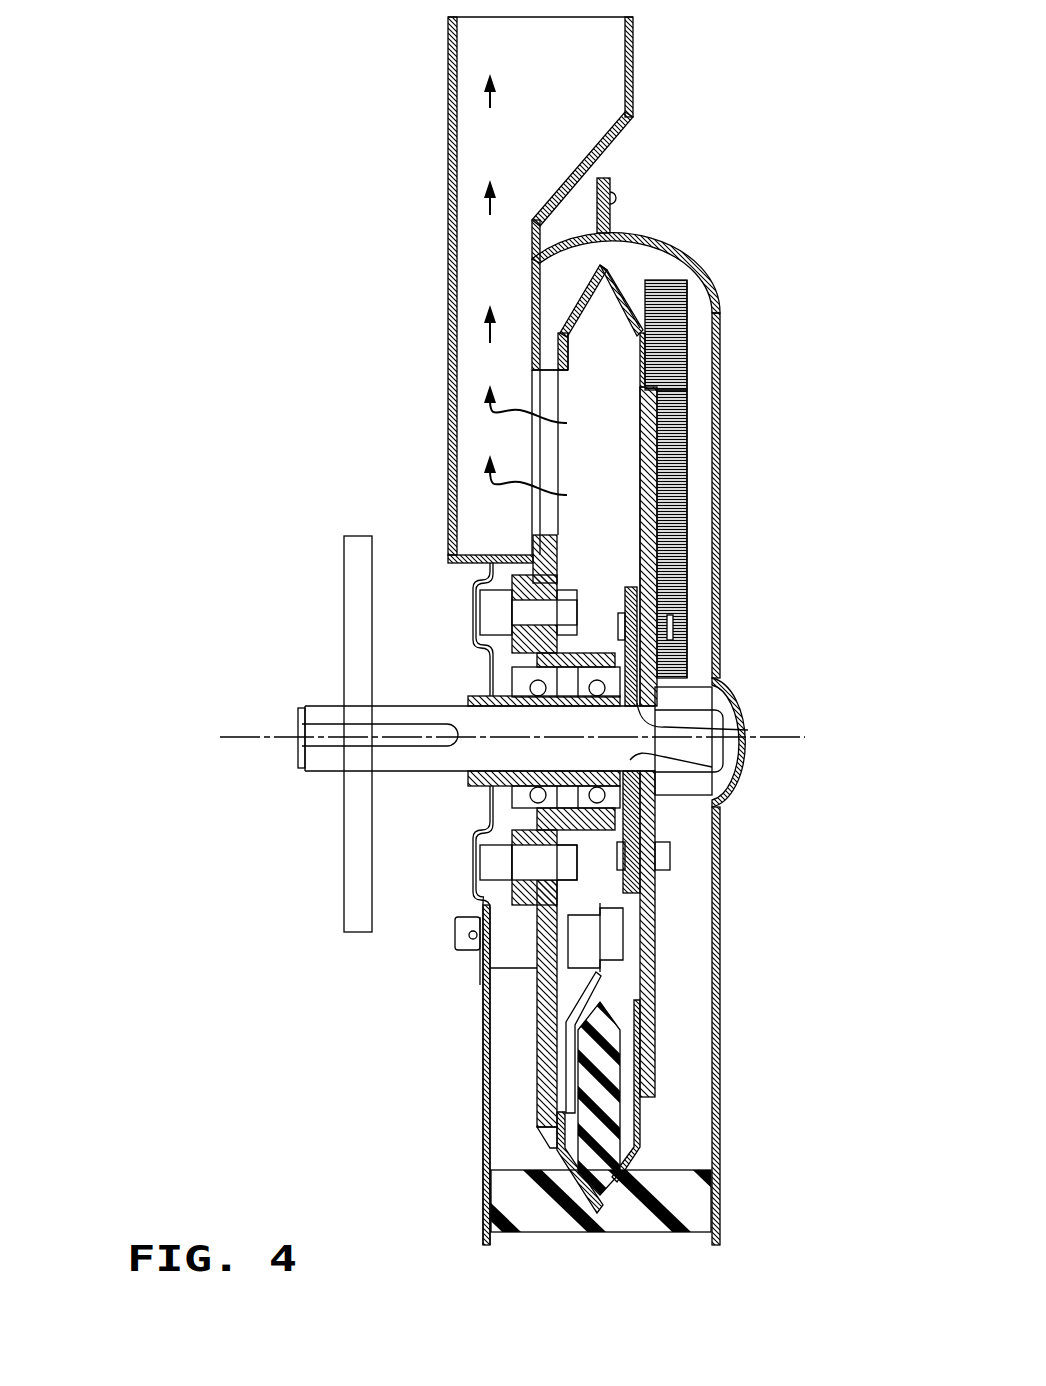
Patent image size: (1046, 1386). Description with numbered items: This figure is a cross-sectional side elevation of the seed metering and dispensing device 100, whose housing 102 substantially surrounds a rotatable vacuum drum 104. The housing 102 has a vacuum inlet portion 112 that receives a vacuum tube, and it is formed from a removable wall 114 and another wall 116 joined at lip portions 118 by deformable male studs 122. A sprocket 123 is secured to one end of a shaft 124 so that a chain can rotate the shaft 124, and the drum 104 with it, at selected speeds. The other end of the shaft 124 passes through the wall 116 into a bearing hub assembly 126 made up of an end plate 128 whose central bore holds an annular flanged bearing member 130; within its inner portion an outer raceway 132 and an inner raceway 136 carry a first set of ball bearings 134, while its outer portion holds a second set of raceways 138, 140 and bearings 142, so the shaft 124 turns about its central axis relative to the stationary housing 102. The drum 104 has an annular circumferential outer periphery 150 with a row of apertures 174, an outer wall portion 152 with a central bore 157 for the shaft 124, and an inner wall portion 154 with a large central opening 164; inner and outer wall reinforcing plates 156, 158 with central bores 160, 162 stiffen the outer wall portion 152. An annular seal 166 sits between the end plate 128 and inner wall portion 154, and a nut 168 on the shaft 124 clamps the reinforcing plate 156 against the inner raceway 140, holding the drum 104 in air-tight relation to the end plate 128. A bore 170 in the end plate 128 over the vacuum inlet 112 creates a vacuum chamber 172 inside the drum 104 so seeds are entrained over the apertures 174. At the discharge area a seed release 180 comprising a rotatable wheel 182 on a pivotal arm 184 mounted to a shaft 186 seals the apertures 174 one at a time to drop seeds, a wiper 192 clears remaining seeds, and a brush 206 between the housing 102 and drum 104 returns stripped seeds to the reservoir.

The seed metering and dispensing device 100 is at (772, 68).
The housing 102 is at (724, 426).
The rotatable vacuum drum 104 is at (645, 1116).
The vacuum inlet portion 112 is at (448, 60).
The removable wall 114 is at (718, 903).
The wall 116 is at (483, 1050).
The lip portion 118 is at (603, 178).
The deformable male stud 122 is at (617, 199).
The sprocket 123 is at (343, 555).
The shaft 124 is at (317, 705).
The bearing hub assembly 126 is at (451, 785).
The end plate 128 is at (553, 555).
The annular flanged bearing member 130 is at (592, 655).
The outer raceway 132 is at (470, 626).
The first set of ball bearings 134 is at (527, 686).
The inner raceway 136 is at (468, 696).
The outer raceway 138 is at (690, 647).
The inner raceway 140 is at (658, 689).
The bearings 142 is at (688, 665).
The annular circumferential outer periphery 150 is at (604, 270).
The outer wall portion 152 is at (640, 417).
The inner wall portion 154 is at (568, 352).
The inner wall reinforcing plate 156 is at (684, 592).
The central bore 157 is at (749, 730).
The outer wall reinforcing plate 158 is at (688, 505).
The central bore 160 is at (715, 757).
The central bore 162 is at (717, 787).
The large central opening 164 is at (565, 370).
The annular seal 166 is at (558, 352).
The nut 168 is at (752, 742).
The bore 170 is at (558, 517).
The vacuum chamber 172 is at (688, 457).
The apertures 174 is at (620, 300).
The seed release 180 is at (620, 1008).
The rotatable wheel 182 is at (610, 1062).
The arm 184 is at (570, 996).
The shaft 186 is at (457, 948).
The wiper 192 is at (680, 1210).
The brush 206 is at (688, 353).